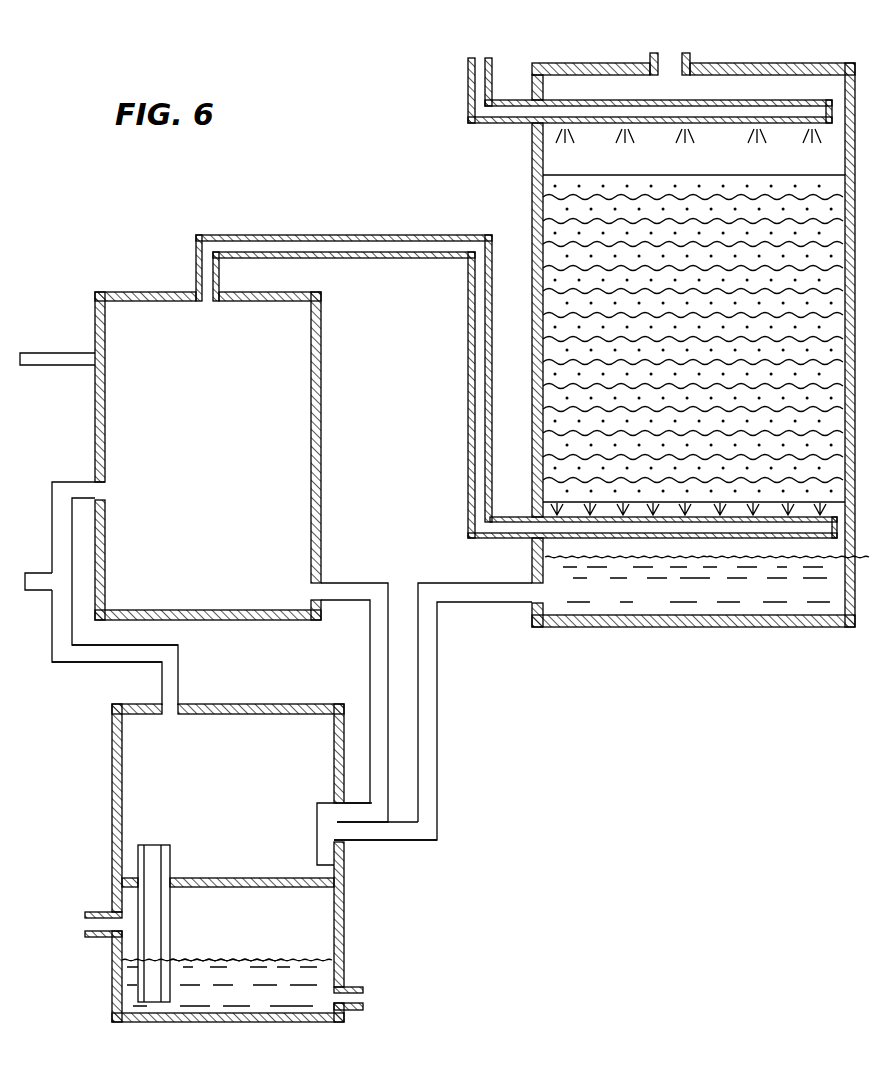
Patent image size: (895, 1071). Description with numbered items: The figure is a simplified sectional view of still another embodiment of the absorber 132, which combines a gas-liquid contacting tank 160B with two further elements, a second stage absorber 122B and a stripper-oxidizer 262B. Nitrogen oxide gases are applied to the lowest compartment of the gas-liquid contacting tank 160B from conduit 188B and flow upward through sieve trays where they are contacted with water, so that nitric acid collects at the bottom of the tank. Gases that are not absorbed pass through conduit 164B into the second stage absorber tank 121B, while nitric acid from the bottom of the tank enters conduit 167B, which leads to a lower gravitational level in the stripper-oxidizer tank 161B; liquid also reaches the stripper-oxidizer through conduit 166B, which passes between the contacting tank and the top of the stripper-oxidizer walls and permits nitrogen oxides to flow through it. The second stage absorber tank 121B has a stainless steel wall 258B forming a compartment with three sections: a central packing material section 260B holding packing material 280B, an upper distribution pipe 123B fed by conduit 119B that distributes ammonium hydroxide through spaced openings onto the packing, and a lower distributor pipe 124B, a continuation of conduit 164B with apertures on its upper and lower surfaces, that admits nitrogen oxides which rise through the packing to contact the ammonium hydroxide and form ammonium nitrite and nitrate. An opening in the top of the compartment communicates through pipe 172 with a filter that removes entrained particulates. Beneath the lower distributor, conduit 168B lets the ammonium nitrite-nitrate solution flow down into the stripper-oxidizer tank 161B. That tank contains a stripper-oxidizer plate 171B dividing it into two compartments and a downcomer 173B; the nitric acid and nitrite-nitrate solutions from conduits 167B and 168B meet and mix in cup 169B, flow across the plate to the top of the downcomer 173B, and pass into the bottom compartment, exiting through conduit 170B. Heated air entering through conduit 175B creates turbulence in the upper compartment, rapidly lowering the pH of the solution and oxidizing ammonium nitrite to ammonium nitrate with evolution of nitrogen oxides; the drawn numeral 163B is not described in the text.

The absorber 132 is at (332, 91).
The conduit 119B is at (468, 88).
The second stage absorber tank 121B is at (786, 624).
The second stage absorber 122B is at (515, 203).
The upper distribution pipe 123B is at (580, 110).
The lower distributor pipe 124B is at (617, 527).
The gas-liquid contacting tank 160B is at (170, 308).
The stripper-oxidizer tank 161B is at (137, 749).
The drain pipe 163B is at (52, 562).
The conduit 164B is at (378, 236).
The conduit 166B is at (120, 660).
The conduit 167B is at (353, 583).
The conduit 168B is at (493, 584).
The cup 169B is at (346, 868).
The conduit 170B is at (366, 990).
The stripper-oxidizer plate 171B is at (273, 878).
The pipe 172 is at (668, 52).
The downcomer 173B is at (170, 858).
The conduit 175B is at (102, 912).
The conduit 188B is at (47, 592).
The stainless steel wall 258B is at (532, 232).
The packing material section 260B is at (806, 175).
The stripper-oxidizer walls 262B is at (285, 704).
The packing material 280B is at (622, 197).